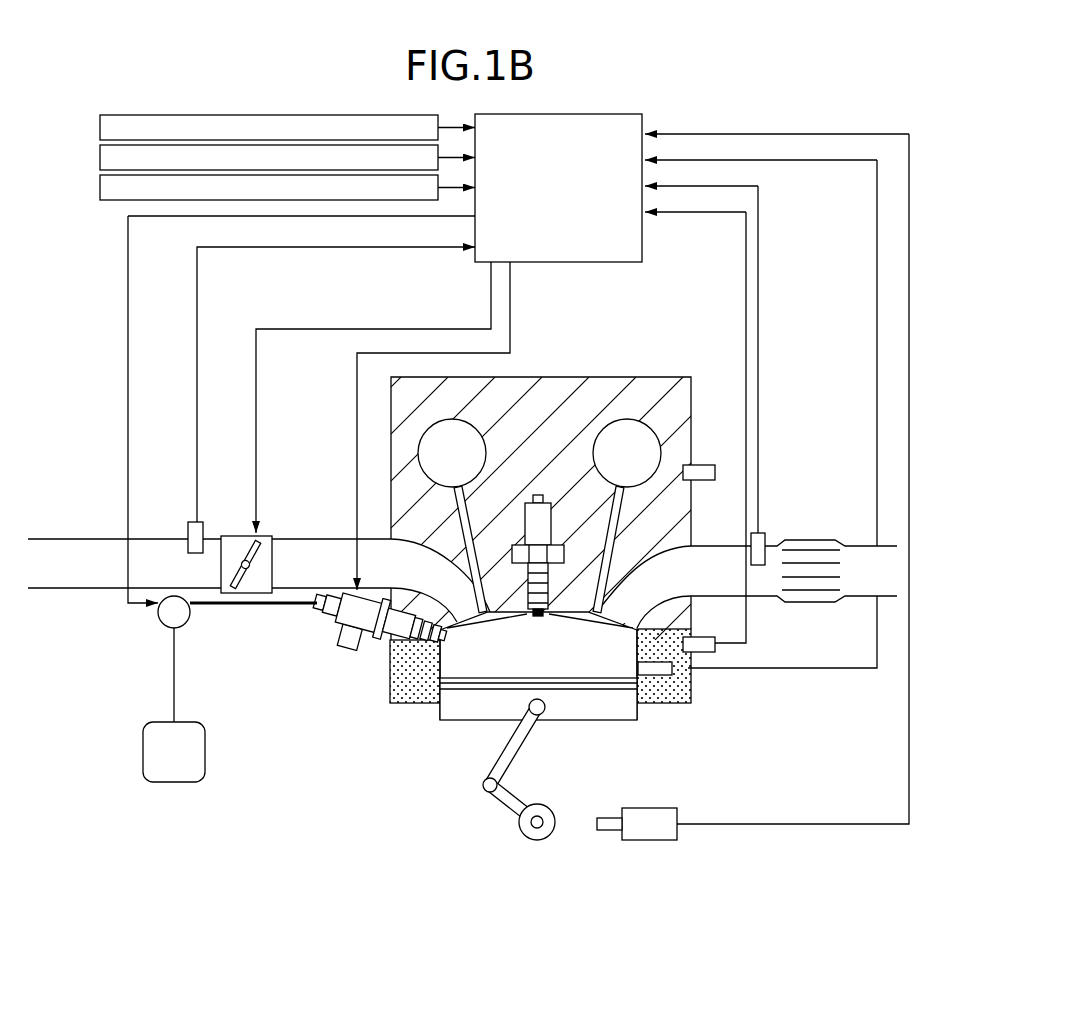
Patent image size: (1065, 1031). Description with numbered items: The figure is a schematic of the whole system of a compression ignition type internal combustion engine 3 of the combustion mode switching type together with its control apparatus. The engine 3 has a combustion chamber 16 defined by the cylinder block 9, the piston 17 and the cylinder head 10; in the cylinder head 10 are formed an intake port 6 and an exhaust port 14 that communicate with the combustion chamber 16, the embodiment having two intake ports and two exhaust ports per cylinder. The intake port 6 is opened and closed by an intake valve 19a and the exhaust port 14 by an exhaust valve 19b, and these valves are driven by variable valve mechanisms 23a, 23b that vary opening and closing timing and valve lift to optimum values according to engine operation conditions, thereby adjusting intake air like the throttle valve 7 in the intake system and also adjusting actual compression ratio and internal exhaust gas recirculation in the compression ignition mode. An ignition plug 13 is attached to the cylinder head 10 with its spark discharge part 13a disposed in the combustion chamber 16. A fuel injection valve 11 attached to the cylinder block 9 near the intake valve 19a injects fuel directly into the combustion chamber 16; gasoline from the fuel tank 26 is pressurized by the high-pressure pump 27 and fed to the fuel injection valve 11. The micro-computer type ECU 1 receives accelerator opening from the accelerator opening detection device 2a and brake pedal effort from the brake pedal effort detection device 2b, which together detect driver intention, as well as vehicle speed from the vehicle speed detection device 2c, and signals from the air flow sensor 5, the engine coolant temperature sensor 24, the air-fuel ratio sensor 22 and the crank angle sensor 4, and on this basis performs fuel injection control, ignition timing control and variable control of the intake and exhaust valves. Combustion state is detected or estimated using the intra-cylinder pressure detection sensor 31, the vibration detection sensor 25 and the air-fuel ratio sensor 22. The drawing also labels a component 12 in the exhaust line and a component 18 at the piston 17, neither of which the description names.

The ECU 1 is at (645, 237).
The accelerator opening detection device 2a is at (100, 127).
The brake pedal effort detection device 2b is at (100, 157).
The vehicle speed detection device 2c is at (100, 187).
The internal combustion engine 3 is at (665, 377).
The crank angle sensor 4 is at (647, 842).
The air flow sensor 5 is at (188, 523).
The intake port 6 is at (412, 553).
The throttle valve 7 is at (239, 536).
The cylinder block 9 is at (390, 698).
The cylinder head 10 is at (391, 401).
The fuel injection valve 11 is at (382, 642).
The catalyst 12 is at (813, 540).
The ignition plug 13 is at (538, 495).
The spark discharge part 13a is at (538, 620).
The exhaust port 14 is at (680, 608).
The combustion chamber 16 is at (615, 670).
The piston 17 is at (593, 723).
The piston pin 18 is at (573, 690).
The intake valve 19a is at (477, 623).
The exhaust valve 19b is at (640, 545).
The air-fuel ratio sensor 22 is at (769, 535).
The variable valve mechanism 23a is at (418, 452).
The variable valve mechanism 23b is at (627, 420).
The engine coolant temperature sensor 24 is at (710, 465).
The vibration detection sensor 25 is at (715, 650).
The fuel tank 26 is at (172, 782).
The high-pressure pump 27 is at (162, 620).
The intra-cylinder pressure detection sensor 31 is at (672, 684).